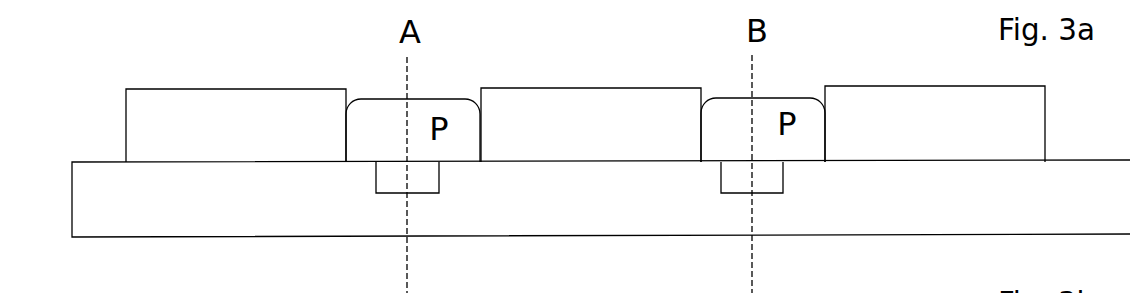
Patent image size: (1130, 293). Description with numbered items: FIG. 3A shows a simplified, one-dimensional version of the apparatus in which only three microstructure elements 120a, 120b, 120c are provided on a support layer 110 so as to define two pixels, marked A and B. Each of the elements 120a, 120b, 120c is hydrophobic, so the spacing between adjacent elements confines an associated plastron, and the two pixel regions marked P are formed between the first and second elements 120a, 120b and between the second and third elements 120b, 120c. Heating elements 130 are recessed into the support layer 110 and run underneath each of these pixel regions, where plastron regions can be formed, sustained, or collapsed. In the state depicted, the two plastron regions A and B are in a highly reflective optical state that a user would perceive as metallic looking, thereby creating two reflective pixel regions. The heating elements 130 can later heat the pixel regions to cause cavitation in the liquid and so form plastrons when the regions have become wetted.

The support layer 110 is at (913, 213).
The microstructure element 120a is at (264, 145).
The microstructure element 120b is at (630, 143).
The microstructure element 120c is at (890, 142).
The heating element 130 is at (408, 183).